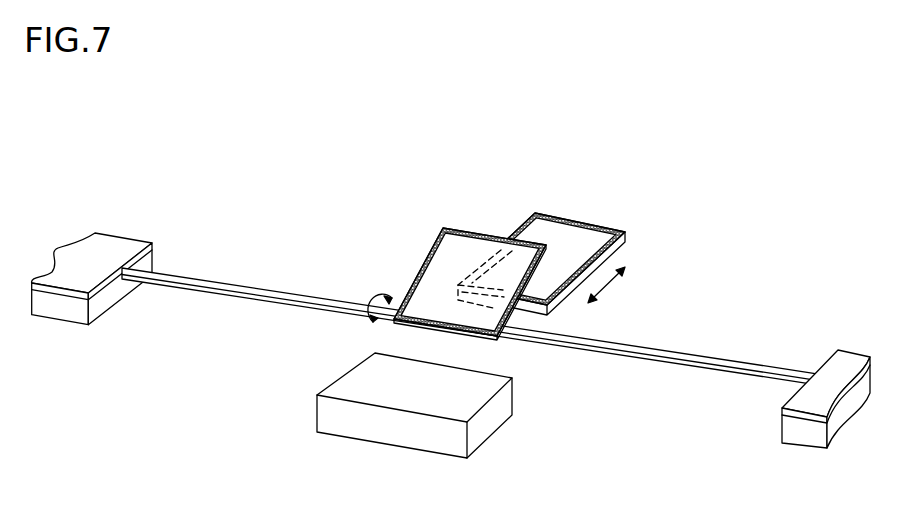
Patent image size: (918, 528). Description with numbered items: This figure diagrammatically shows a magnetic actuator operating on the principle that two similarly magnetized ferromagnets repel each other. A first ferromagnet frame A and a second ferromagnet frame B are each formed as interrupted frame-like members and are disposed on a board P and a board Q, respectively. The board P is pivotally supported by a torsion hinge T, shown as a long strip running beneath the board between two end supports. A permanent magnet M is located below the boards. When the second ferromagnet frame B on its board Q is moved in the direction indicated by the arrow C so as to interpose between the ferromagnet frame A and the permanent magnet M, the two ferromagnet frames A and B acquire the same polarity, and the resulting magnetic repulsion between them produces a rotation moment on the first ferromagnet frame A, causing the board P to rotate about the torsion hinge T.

The torsion hinge T is at (181, 276).
The board P is at (443, 270).
The ferromagnet frame A is at (474, 232).
The ferromagnet frame B is at (563, 219).
The board Q is at (627, 238).
The arrow C is at (607, 286).
The permanent magnet M is at (488, 420).